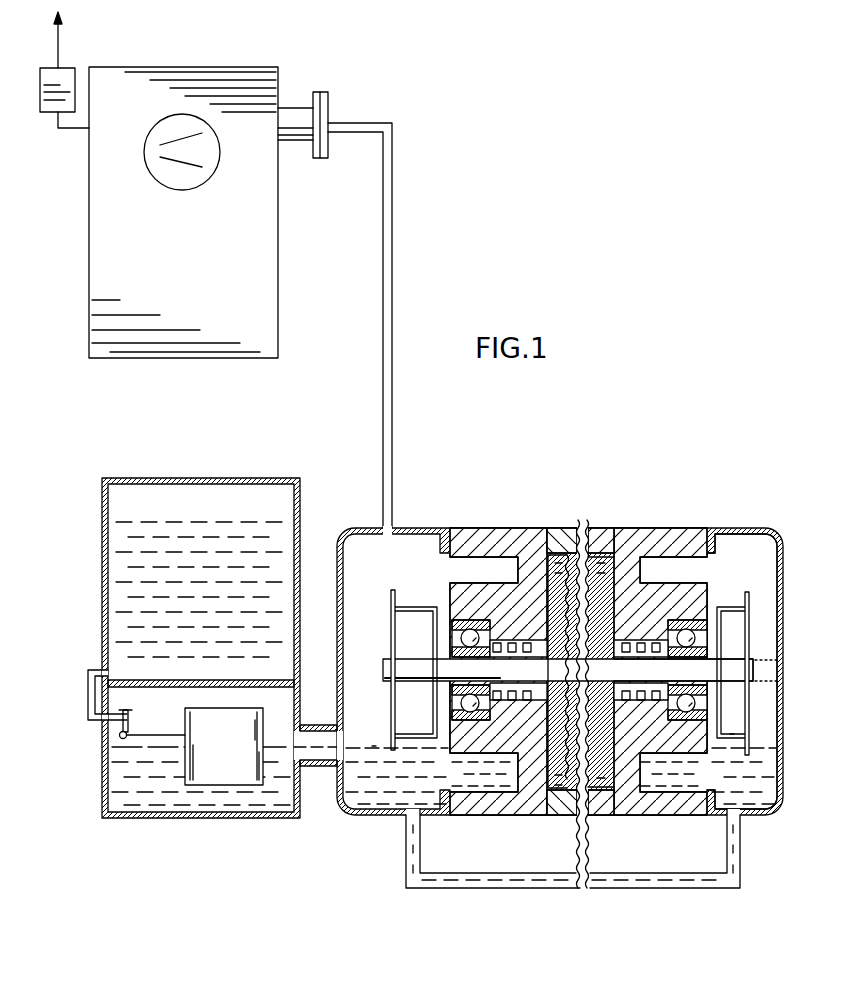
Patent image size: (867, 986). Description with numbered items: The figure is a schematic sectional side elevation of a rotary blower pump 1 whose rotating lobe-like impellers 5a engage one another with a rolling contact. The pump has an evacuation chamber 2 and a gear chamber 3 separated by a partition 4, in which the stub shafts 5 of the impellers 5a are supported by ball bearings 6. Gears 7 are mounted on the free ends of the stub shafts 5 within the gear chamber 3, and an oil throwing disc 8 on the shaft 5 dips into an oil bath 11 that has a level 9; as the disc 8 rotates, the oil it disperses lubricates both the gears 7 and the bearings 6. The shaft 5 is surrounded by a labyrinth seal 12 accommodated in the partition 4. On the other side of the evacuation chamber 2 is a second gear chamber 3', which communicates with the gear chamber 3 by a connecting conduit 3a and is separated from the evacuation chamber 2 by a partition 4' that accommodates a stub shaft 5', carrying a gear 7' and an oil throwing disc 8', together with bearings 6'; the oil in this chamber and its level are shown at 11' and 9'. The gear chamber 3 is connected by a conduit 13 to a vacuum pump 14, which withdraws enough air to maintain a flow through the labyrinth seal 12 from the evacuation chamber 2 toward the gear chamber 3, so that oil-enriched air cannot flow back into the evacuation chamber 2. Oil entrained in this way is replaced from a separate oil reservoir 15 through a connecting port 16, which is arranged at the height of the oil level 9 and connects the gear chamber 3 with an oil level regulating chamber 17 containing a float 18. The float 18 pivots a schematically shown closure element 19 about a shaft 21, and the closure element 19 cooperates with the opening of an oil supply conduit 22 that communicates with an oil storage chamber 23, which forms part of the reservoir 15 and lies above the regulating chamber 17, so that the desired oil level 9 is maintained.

The rotary blower pump 1 is at (560, 689).
The evacuation chamber 2 is at (588, 547).
The gear chamber 3 is at (560, 670).
The second gear chamber 3' is at (742, 671).
The connecting conduit 3a is at (553, 888).
The partition 4 is at (513, 698).
The second partition 4' is at (647, 698).
The stub shaft 5 is at (552, 677).
The second stub shaft 5' is at (696, 652).
The lobe-like impellers 5a is at (547, 802).
The ball bearings 6 is at (485, 664).
The second bearings 6' is at (676, 657).
The gears 7 is at (416, 650).
The second gear 7' is at (744, 673).
The oil throwing disc 8 is at (378, 670).
The second oil throwing disc 8' is at (735, 656).
The oil level 9 is at (373, 721).
The second oil level 9' is at (731, 712).
The oil bath 11 is at (431, 776).
The second oil bath 11' is at (710, 776).
The labyrinth seal 12 is at (551, 643).
The conduit 13 is at (392, 330).
The vacuum pump 14 is at (271, 236).
The oil reservoir 15 is at (102, 598).
The connecting port 16 is at (318, 768).
The oil level regulating chamber 17 is at (175, 715).
The float 18 is at (231, 708).
The closure element 19 is at (128, 716).
The shaft 21 is at (119, 737).
The oil supply conduit 22 is at (88, 700).
The oil storage chamber 23 is at (211, 516).